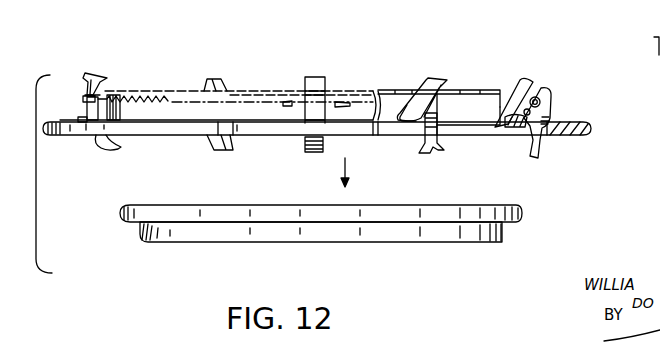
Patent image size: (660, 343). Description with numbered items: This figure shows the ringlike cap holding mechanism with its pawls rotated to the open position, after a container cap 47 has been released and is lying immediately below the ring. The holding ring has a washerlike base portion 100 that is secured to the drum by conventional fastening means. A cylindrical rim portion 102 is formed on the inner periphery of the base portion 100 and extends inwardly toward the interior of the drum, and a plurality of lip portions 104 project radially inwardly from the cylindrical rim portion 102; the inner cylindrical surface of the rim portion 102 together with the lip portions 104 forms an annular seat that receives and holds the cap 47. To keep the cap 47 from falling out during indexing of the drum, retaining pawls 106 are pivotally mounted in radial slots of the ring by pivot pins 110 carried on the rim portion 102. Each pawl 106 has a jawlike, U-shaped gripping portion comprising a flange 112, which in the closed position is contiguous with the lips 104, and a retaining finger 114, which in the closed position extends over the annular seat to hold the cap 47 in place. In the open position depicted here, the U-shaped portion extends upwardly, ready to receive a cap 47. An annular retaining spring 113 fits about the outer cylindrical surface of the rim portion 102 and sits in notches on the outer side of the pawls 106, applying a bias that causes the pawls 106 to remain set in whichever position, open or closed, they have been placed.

The cap 47 is at (517, 213).
The base portion 100 is at (591, 128).
The cylindrical rim portion 102 is at (475, 122).
The lip portions 104 is at (458, 92).
The retaining pawls 106 is at (128, 60).
The pivot pins 110 is at (550, 110).
The flange 112 is at (405, 114).
The annular retaining spring 113 is at (146, 95).
The retaining finger 114 is at (428, 153).